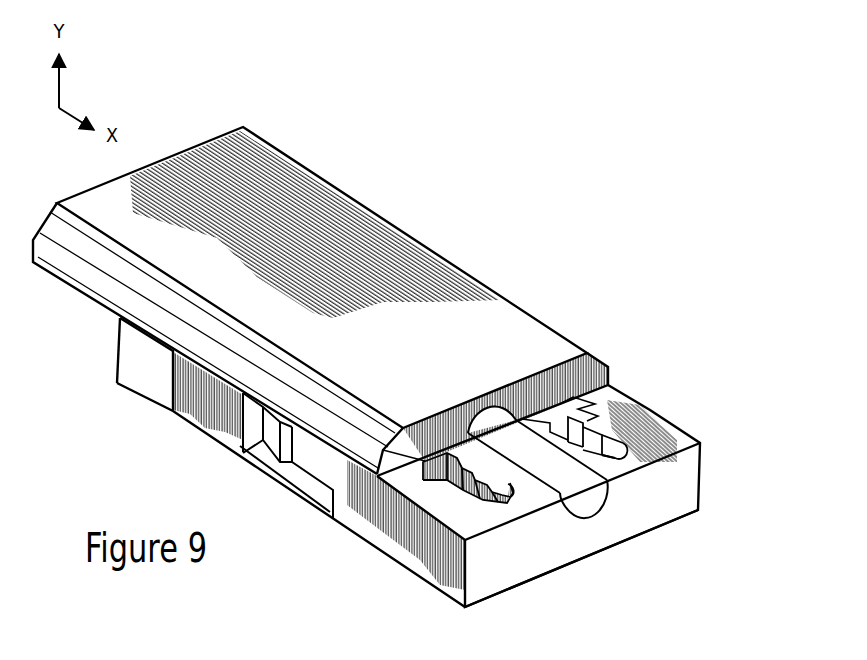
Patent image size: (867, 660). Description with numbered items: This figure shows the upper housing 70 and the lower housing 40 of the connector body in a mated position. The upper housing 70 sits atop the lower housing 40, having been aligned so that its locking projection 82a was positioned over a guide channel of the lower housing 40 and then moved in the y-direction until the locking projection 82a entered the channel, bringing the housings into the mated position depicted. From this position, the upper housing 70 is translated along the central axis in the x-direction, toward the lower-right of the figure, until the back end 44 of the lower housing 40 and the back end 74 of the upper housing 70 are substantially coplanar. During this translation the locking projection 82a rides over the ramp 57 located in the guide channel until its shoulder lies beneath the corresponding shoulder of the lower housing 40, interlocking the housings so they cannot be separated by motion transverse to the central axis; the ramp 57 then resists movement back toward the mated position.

The upper housing 70 is at (543, 343).
The lower housing 40 is at (643, 427).
The back end 44 is at (646, 535).
The back end 74 is at (389, 464).
The locking projection 82a is at (201, 413).
The ramp 57 is at (273, 440).